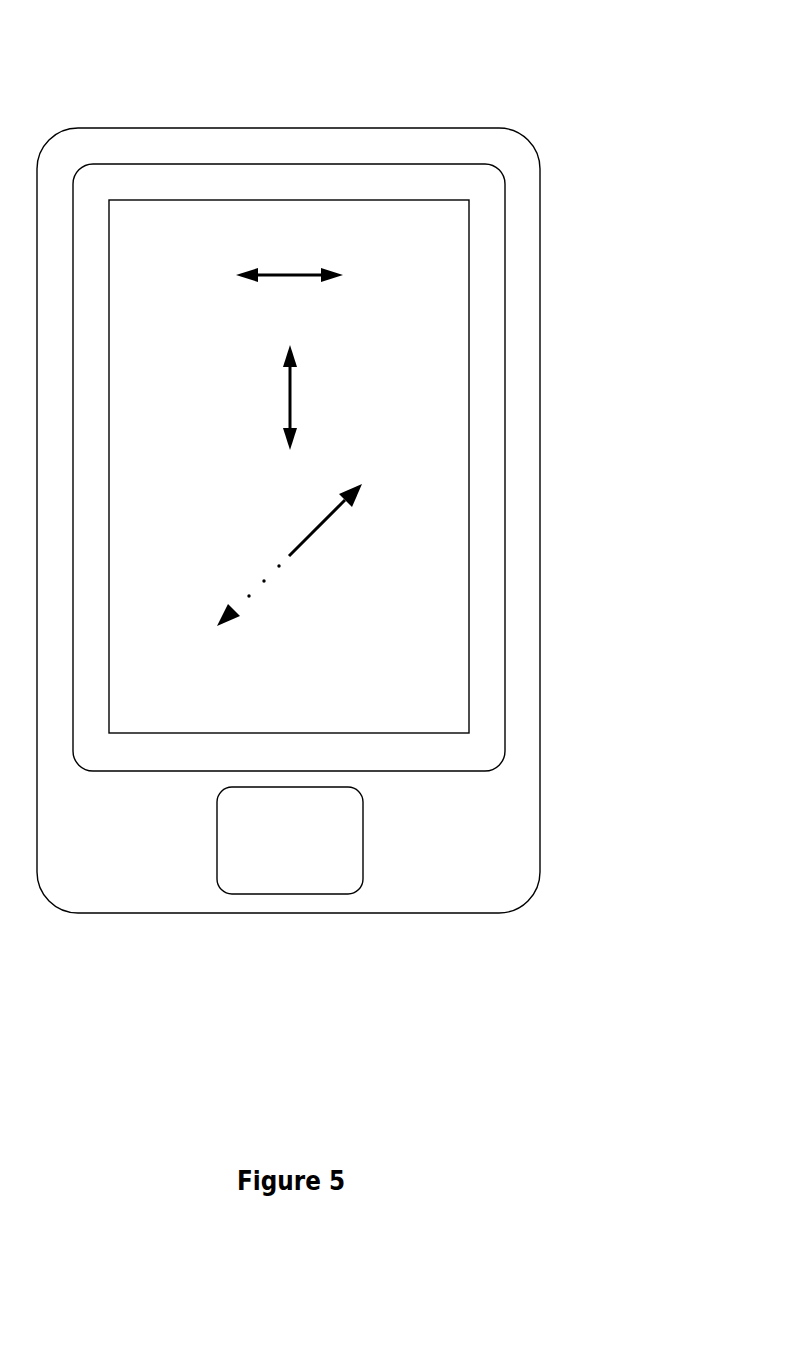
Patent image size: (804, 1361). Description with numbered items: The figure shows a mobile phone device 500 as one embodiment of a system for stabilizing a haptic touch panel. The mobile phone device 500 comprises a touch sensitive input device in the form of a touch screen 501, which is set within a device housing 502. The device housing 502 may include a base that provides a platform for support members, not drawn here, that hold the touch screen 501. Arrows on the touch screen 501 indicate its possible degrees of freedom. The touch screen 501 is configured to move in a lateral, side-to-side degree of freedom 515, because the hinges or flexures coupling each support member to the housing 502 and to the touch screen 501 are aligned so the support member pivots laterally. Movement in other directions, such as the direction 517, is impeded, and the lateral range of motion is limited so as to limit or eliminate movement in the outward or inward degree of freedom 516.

The mobile phone device 500 is at (433, 95).
The touch screen 501 is at (440, 707).
The device housing 502 is at (494, 867).
The lateral degree of freedom 515 is at (309, 262).
The outward or inward degree of freedom 516 is at (279, 549).
The other direction of movement 517 is at (262, 406).